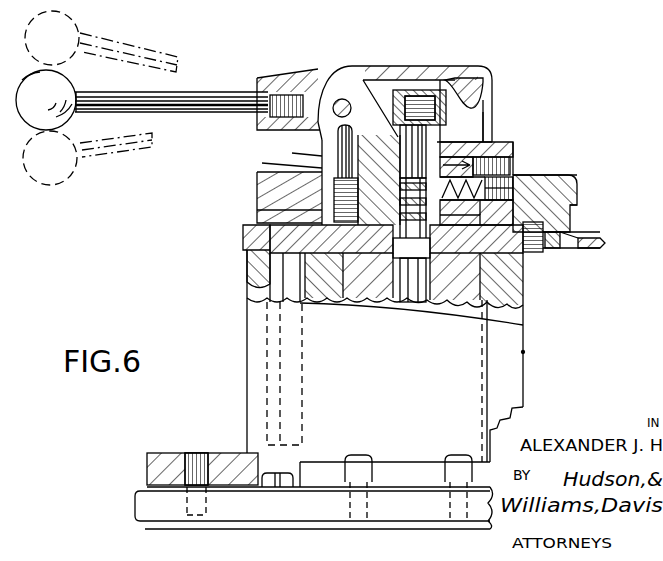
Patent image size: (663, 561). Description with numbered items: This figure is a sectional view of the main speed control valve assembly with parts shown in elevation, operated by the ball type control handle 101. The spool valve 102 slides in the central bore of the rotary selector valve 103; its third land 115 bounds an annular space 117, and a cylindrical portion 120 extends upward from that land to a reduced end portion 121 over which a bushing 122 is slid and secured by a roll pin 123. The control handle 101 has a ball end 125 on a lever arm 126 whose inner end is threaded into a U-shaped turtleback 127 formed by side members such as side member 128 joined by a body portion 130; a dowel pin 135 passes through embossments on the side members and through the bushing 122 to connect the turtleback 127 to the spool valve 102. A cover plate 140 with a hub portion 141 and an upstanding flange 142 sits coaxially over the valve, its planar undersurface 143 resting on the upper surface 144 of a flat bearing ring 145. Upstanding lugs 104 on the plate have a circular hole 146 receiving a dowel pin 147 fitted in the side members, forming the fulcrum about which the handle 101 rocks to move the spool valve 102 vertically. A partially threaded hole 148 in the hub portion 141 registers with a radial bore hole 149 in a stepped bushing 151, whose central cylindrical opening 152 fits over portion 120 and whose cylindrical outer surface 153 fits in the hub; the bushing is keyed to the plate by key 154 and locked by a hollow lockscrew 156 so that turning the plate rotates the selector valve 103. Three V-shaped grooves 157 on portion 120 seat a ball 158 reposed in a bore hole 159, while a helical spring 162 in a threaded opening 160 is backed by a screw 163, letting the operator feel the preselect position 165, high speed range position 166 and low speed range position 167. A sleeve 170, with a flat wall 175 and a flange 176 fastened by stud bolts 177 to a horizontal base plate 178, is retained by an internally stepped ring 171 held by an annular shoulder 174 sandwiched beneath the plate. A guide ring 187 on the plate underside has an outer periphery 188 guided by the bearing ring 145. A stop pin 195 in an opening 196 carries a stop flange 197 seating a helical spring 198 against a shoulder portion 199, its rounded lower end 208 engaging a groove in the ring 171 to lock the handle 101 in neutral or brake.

The control handle 101 is at (72, 118).
The spool valve 102 is at (523, 325).
The rotary selector valve 103 is at (252, 290).
The upstanding lugs 104 is at (342, 98).
The third land 115 is at (505, 272).
The annular space 117 is at (505, 290).
The cylindrical portion 120 is at (448, 126).
The reduced end portion 121 is at (428, 88).
The bushing 122 is at (484, 70).
The roll pin 123 is at (482, 96).
The ball end 125 is at (72, 83).
The lever arm 126 is at (180, 95).
The turtleback 127 is at (300, 72).
The side member 128 is at (490, 118).
The body portion 130 is at (393, 70).
The dowel pin 135 is at (413, 90).
The cover plate 140 is at (580, 194).
The hub portion 141 is at (513, 148).
The upstanding flange 142 is at (576, 178).
The undersurface 143 is at (578, 210).
The upper surface 144 is at (590, 233).
The flat bearing ring 145 is at (600, 244).
The circular hole 146 is at (328, 90).
The dowel pin 147 is at (258, 124).
The partially threaded hole 148 is at (512, 163).
The radial bore hole 149 is at (435, 151).
The stepped bushing 151 is at (436, 246).
The central cylindrical opening 152 is at (411, 270).
The cylindrical outer surface 153 is at (349, 175).
The key 154 is at (367, 180).
The hollow lockscrew 156 is at (515, 178).
The V-shaped grooves 157 is at (413, 218).
The ball 158 is at (450, 228).
The bore hole 159 is at (446, 205).
The partially internally threaded opening 160 is at (478, 215).
The helical spring 162 is at (514, 186).
The screw 163 is at (514, 197).
The preselect position 165 is at (37, 72).
The high speed range position 166 is at (76, 25).
The low speed range position 167 is at (72, 178).
The sleeve 170 is at (525, 305).
The internally stepped ring 171 is at (258, 255).
The annular shoulder 174 is at (350, 262).
The flat wall 175 is at (524, 352).
The flange 176 is at (390, 462).
The stud bolts 177 is at (200, 453).
The base plate 178 is at (137, 506).
The guide ring 187 is at (545, 256).
The outer periphery 188 is at (585, 248).
The stop pin 195 is at (292, 154).
The opening 196 is at (277, 165).
The stop flange 197 is at (258, 212).
The helical spring 198 is at (258, 191).
The shoulder portion 199 is at (258, 180).
The rounded lower end 208 is at (245, 230).